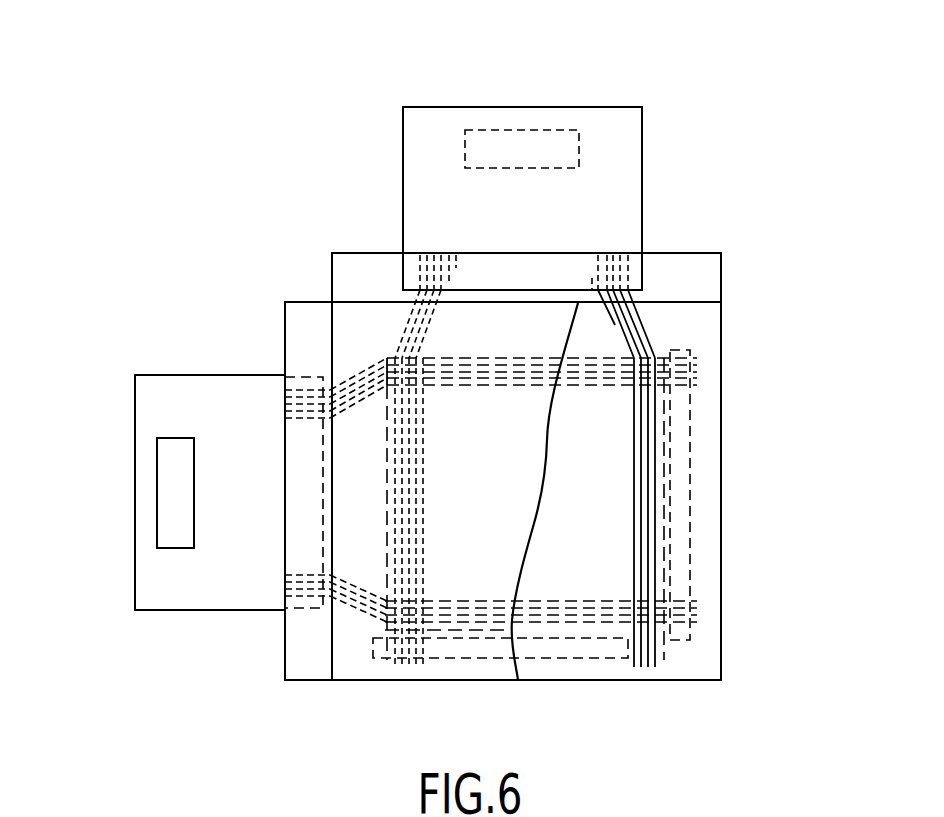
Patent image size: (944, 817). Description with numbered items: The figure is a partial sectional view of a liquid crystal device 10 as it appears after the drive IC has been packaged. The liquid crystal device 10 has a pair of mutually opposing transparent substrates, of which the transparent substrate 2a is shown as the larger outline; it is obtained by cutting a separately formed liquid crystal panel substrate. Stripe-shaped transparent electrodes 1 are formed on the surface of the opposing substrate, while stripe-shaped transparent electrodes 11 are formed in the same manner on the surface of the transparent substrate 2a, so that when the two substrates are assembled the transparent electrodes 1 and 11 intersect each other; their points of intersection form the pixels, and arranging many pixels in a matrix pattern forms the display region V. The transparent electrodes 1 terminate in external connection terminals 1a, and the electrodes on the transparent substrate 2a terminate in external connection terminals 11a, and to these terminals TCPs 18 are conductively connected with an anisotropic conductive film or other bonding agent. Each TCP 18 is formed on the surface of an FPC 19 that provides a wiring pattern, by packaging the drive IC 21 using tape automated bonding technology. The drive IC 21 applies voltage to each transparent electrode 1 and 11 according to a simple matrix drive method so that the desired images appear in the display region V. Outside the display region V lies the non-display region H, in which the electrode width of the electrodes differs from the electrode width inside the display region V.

The liquid crystal device 10 is at (312, 256).
The transparent substrate 2a is at (708, 278).
The TCP (tape carrier package) 18 is at (335, 305).
The FPC (flexible printed circuit) 19 is at (607, 130).
The drive IC 21 is at (326, 302).
The external connection terminals 1a is at (537, 262).
The transparent electrodes 1 is at (668, 478).
The transparent electrodes 11 is at (478, 362).
The external connection terminals 11a is at (293, 462).
The display region V is at (597, 352).
The non-display region H is at (690, 552).